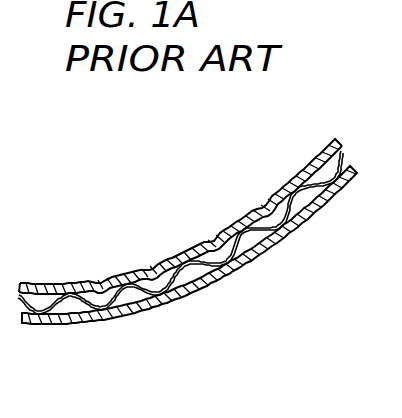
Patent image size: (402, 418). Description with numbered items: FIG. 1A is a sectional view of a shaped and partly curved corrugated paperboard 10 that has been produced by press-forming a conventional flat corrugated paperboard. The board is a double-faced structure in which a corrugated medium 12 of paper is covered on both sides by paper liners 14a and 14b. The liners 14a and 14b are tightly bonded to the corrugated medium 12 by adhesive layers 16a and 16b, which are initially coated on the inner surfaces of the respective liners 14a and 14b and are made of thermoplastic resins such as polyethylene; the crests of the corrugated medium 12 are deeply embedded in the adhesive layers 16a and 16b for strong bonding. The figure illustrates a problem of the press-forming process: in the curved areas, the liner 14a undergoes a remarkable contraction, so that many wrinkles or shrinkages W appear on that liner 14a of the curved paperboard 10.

The shaped and partly curved corrugated paperboard 10 is at (271, 180).
The corrugated medium 12 is at (143, 313).
The liner 14a is at (41, 282).
The liner 14b is at (93, 320).
The adhesive layer 16a is at (151, 262).
The adhesive layer 16b is at (200, 287).
The wrinkles W is at (145, 264).